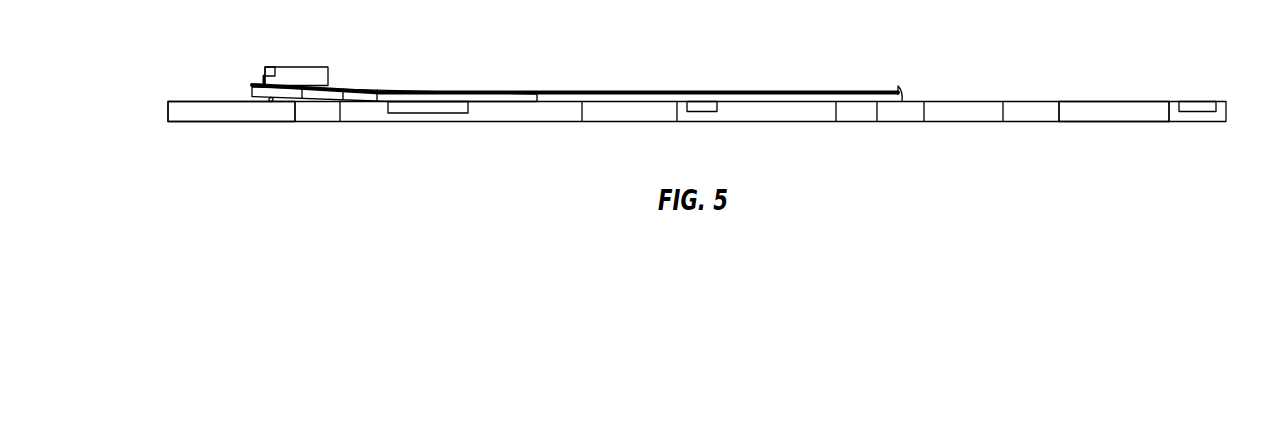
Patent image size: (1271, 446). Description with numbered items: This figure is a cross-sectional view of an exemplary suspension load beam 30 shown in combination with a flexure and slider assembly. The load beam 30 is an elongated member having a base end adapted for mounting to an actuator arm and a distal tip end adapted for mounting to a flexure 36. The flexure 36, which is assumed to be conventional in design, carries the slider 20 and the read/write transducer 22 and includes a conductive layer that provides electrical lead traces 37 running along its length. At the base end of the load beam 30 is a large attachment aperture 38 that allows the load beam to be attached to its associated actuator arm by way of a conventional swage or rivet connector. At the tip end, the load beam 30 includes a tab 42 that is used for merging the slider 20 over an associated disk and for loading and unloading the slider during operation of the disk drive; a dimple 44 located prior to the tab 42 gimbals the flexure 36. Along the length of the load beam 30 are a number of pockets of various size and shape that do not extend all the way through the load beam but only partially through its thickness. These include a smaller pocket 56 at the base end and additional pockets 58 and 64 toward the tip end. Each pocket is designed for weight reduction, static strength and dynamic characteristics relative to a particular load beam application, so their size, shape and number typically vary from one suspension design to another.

The slider 20 is at (297, 73).
The read/write transducer 22 is at (270, 66).
The suspension load beam 30 is at (507, 122).
The flexure 36 is at (438, 98).
The electrical lead traces 37 is at (747, 90).
The attachment aperture 38 is at (1113, 112).
The tab 42 is at (185, 105).
The dimple 44 is at (272, 101).
The pocket 56 is at (1198, 110).
The pocket 58 is at (700, 110).
The pocket 64 is at (415, 108).